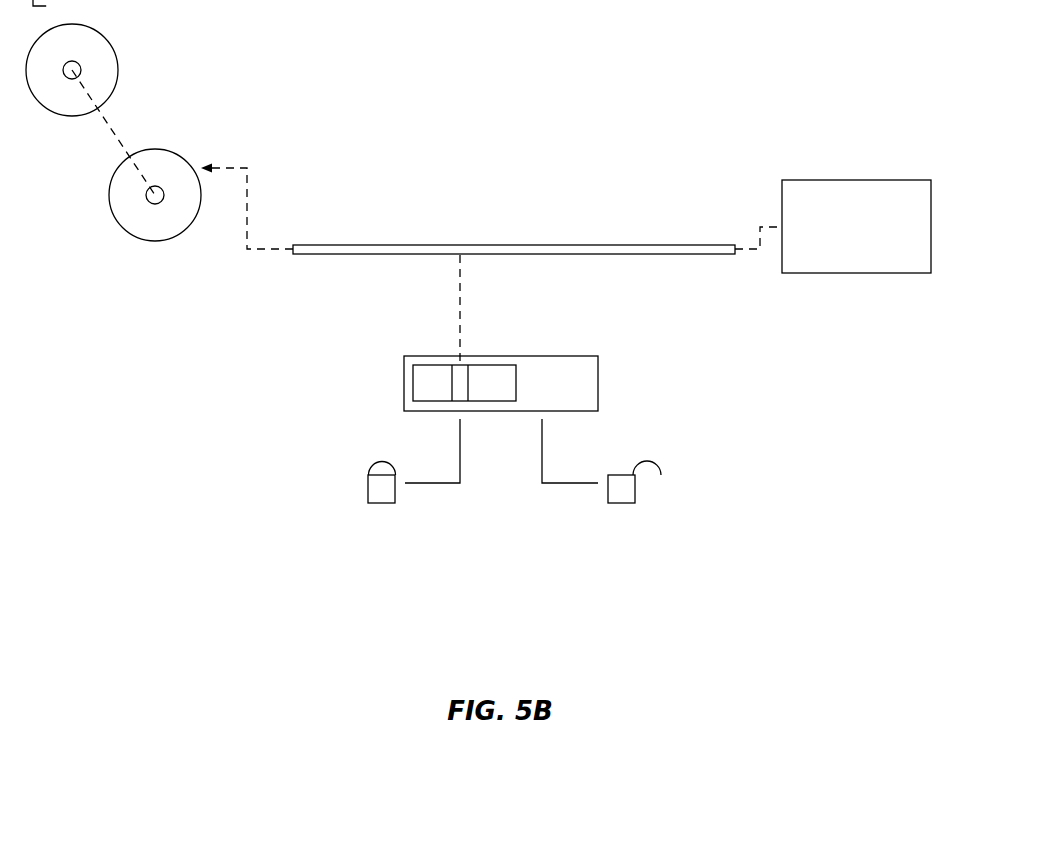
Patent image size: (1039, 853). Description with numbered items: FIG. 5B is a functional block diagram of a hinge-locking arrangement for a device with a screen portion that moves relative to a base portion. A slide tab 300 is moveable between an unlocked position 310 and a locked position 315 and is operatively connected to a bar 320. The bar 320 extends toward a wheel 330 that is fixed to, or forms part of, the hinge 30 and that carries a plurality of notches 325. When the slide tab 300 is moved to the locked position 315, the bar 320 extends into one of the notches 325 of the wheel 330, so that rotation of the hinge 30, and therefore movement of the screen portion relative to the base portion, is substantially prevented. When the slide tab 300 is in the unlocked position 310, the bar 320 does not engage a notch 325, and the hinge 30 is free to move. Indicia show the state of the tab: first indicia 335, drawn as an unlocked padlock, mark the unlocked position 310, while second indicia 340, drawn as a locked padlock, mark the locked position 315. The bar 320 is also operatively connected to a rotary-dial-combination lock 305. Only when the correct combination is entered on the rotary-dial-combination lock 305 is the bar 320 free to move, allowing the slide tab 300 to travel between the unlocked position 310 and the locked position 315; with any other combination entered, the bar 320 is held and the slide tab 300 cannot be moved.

The hinge 30 is at (68, 117).
The slide tab 300 is at (413, 377).
The rotary-dial-combination lock 305 is at (838, 180).
The unlocked position 310 is at (577, 540).
The locked position 315 is at (429, 540).
The bar 320 is at (505, 245).
The notches 325 is at (153, 148).
The wheel 330 is at (160, 242).
The first indicia 335 is at (670, 510).
The second indicia 340 is at (341, 512).